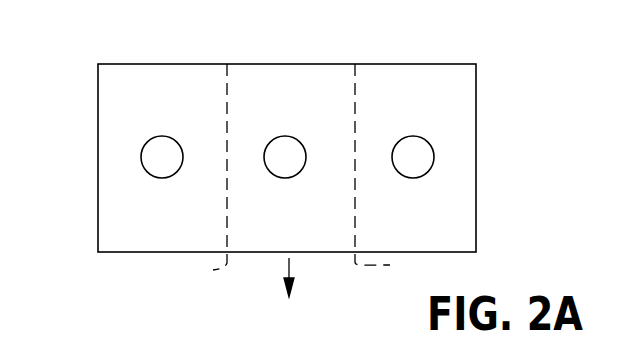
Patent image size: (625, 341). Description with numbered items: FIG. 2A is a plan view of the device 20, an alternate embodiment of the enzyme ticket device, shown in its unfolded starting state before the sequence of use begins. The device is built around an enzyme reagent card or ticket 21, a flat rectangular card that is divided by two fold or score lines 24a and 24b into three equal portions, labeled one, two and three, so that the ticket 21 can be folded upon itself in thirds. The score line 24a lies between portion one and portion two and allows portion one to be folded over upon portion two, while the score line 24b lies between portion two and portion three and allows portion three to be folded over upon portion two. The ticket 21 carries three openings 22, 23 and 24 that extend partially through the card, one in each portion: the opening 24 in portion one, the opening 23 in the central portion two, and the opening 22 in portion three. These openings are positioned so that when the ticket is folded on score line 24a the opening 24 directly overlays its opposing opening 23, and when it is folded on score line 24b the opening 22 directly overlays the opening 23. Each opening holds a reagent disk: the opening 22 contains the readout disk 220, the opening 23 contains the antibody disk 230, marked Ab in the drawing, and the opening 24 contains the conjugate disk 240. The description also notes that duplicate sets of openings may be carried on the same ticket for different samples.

The device 20 is at (393, 49).
The enzyme reagent card or ticket 21 is at (477, 73).
The opening 22 is at (433, 148).
The opening 23 is at (292, 136).
The opening 24 is at (156, 136).
The fold or score line 24a is at (192, 175).
The fold or score line 24b is at (402, 177).
The readout disk 220 is at (413, 168).
The antibody disk 230 is at (300, 178).
The conjugate disk 240 is at (150, 163).